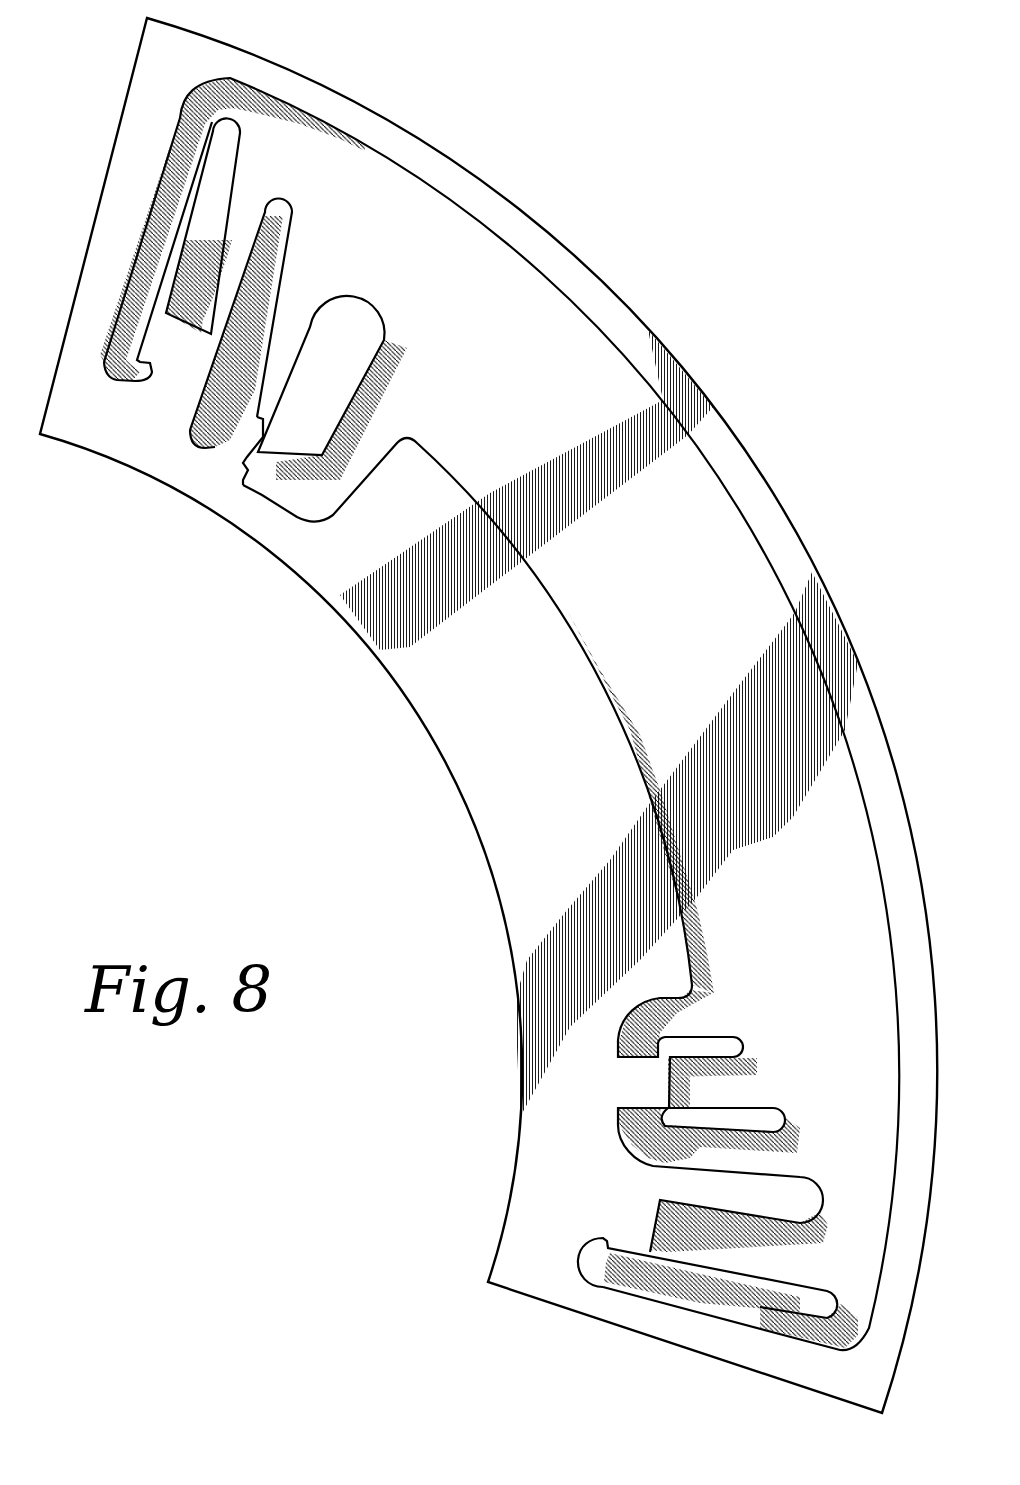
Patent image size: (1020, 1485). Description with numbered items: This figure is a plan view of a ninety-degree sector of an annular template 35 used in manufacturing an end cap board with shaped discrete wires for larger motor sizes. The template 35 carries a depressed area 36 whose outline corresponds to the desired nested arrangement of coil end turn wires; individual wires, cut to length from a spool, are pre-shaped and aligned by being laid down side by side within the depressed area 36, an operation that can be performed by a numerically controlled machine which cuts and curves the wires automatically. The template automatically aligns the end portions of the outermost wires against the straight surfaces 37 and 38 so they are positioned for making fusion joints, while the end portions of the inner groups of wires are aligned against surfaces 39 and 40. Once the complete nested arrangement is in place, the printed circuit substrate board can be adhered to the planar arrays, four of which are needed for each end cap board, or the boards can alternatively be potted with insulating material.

The annular template 35 is at (578, 268).
The depressed area 36 is at (688, 613).
The straight surface 37 is at (127, 380).
The straight surface 38 is at (201, 333).
The surface 39 is at (247, 455).
The surface 40 is at (280, 462).